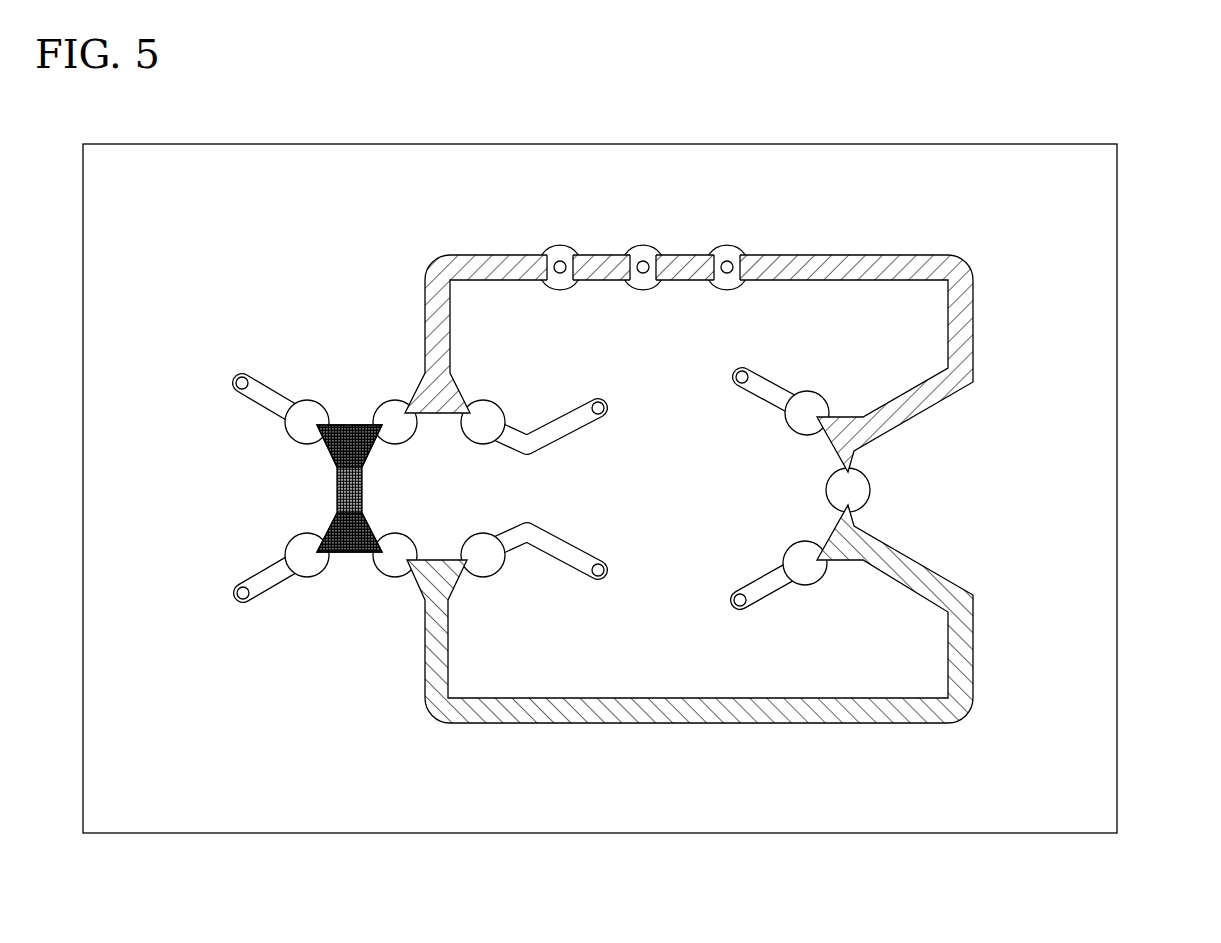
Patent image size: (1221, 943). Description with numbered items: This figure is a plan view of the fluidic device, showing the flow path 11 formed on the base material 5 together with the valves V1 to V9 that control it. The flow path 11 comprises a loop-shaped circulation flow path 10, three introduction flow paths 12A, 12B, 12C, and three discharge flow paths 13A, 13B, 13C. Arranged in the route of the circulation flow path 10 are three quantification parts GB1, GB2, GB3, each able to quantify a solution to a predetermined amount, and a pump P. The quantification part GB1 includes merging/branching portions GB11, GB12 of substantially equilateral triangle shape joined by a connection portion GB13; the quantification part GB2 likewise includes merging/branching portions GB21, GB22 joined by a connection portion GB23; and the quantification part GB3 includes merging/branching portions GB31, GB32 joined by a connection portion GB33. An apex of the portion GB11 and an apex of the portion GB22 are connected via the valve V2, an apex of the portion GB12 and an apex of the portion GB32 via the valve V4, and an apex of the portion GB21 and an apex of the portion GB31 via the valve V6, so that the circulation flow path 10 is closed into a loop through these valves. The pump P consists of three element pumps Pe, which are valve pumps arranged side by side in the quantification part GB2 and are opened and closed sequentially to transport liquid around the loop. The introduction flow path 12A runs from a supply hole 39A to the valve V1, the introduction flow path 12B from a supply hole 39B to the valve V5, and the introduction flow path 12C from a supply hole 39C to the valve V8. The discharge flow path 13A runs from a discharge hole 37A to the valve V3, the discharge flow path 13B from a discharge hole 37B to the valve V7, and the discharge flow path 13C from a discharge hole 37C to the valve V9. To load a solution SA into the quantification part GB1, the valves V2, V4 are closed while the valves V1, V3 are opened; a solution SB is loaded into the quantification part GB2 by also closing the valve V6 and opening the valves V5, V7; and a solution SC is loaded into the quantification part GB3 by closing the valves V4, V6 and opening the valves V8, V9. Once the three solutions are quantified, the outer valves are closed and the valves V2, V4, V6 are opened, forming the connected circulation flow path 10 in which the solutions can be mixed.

The base material 5 is at (1117, 207).
The circulation flow path 10 is at (670, 427).
The flow path 11 is at (799, 261).
The introduction flow path 12A is at (226, 373).
The introduction flow path 12B is at (739, 391).
The introduction flow path 12C is at (729, 616).
The discharge flow path 13A is at (227, 617).
The discharge flow path 13B is at (572, 417).
The discharge flow path 13C is at (572, 576).
The discharge hole 37A is at (238, 590).
The discharge hole 37B is at (602, 403).
The discharge hole 37C is at (602, 563).
The supply hole 39A is at (198, 368).
The supply hole 39B is at (736, 373).
The supply hole 39C is at (733, 600).
The valve V1 is at (292, 430).
The valve V2 is at (412, 432).
The valve V3 is at (290, 545).
The valve V4 is at (404, 543).
The valve V5 is at (811, 397).
The valve V6 is at (826, 490).
The valve V7 is at (497, 408).
The valve V8 is at (821, 577).
The valve V9 is at (490, 567).
The quantification part GB1 is at (309, 492).
The merging/branching portion GB11 is at (350, 424).
The merging/branching portion GB12 is at (345, 556).
The connection portion GB13 is at (370, 478).
The solution SA is at (360, 488).
The quantification part GB2 is at (799, 261).
The merging/branching portion GB21 is at (895, 376).
The merging/branching portion GB22 is at (452, 377).
The connection portion GB23 is at (897, 256).
The solution SB is at (503, 262).
The quantification part GB3 is at (774, 655).
The merging/branching portion GB31 is at (855, 540).
The merging/branching portion GB32 is at (415, 596).
The connection portion GB33 is at (768, 727).
The solution SC is at (555, 727).
The pump P is at (648, 170).
The element pump Pe is at (564, 195).